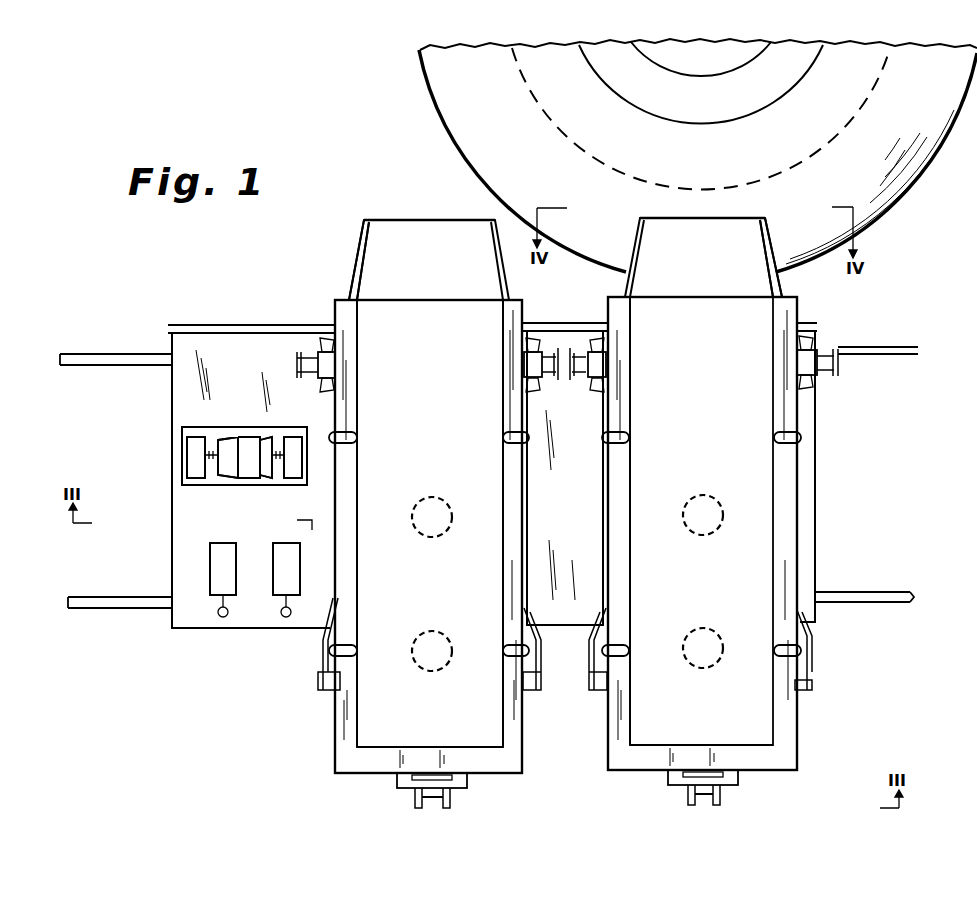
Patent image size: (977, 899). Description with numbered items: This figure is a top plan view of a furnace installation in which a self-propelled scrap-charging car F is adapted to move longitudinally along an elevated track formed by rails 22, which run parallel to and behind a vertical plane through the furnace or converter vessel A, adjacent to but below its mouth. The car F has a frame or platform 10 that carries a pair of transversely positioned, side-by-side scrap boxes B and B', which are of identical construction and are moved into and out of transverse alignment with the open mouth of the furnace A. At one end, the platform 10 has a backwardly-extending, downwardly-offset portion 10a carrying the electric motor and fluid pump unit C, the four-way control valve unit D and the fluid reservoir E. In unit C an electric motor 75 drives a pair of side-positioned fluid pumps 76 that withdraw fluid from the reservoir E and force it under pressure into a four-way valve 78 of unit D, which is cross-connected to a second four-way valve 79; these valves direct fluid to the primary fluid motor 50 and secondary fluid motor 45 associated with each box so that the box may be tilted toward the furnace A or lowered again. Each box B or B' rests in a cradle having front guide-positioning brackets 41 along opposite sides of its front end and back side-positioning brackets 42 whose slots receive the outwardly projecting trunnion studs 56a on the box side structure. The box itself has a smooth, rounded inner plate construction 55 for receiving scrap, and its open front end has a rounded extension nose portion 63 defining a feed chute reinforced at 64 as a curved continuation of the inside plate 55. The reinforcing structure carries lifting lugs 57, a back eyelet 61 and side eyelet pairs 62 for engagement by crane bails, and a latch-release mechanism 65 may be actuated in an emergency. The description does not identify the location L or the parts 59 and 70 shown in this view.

The furnace A is at (432, 104).
The scrap box B is at (410, 496).
The scrap box B' is at (727, 494).
The electric motor and fluid pump unit C is at (187, 458).
The four-way control valve unit D is at (273, 556).
The fluid reservoir E is at (190, 427).
The scrap-charging car F is at (243, 388).
The lower position L is at (327, 801).
The platform 10 is at (556, 628).
The downwardly-offset portion 10a is at (284, 632).
The track 22 is at (118, 356).
The front guide-positioning brackets 41 is at (590, 382).
The back side-positioning brackets 42 is at (318, 648).
The secondary fluid motor 45 is at (440, 498).
The primary fluid motor 50 is at (446, 636).
The inner plate construction 55 is at (470, 578).
The trunnion studs 56a is at (322, 666).
The lifting lugs 57 is at (300, 362).
The inner guide rail 59 is at (358, 590).
The back eyelet 61 is at (468, 780).
The side eyelets 62 is at (357, 437).
The front extension nose portion 63 is at (428, 220).
The feed chute reinforcement 64 is at (356, 262).
The latch-release mechanism 65 is at (450, 800).
The cross pin 70 is at (430, 800).
The electric motor 75 is at (250, 482).
The fluid pumps 76 is at (197, 480).
The four-way valve 78 is at (210, 568).
The second four-way valve 79 is at (300, 568).